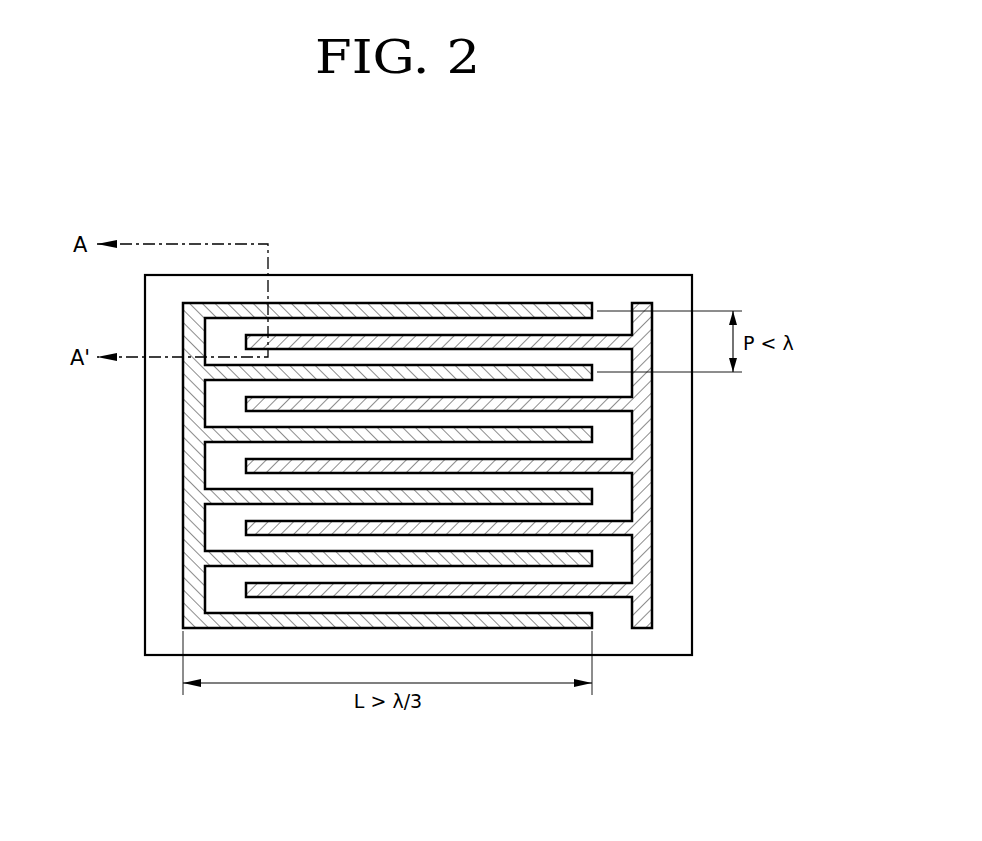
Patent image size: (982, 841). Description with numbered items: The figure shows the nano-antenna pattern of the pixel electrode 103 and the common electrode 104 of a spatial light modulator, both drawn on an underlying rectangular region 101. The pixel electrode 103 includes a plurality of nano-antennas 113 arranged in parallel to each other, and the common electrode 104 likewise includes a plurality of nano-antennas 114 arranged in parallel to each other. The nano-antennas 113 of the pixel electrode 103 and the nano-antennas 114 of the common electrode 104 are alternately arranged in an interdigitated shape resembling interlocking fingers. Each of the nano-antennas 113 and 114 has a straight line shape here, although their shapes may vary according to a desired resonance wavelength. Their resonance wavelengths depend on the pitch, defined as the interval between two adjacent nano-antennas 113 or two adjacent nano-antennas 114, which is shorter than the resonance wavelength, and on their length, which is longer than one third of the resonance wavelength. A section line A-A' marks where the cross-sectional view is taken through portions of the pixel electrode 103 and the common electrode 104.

The substrate 101 is at (677, 605).
The pixel electrode 103 is at (193, 405).
The common electrode 104 is at (645, 438).
The nano-antennas of the pixel electrode 113 is at (322, 310).
The nano-antennas of the common electrode 114 is at (480, 340).